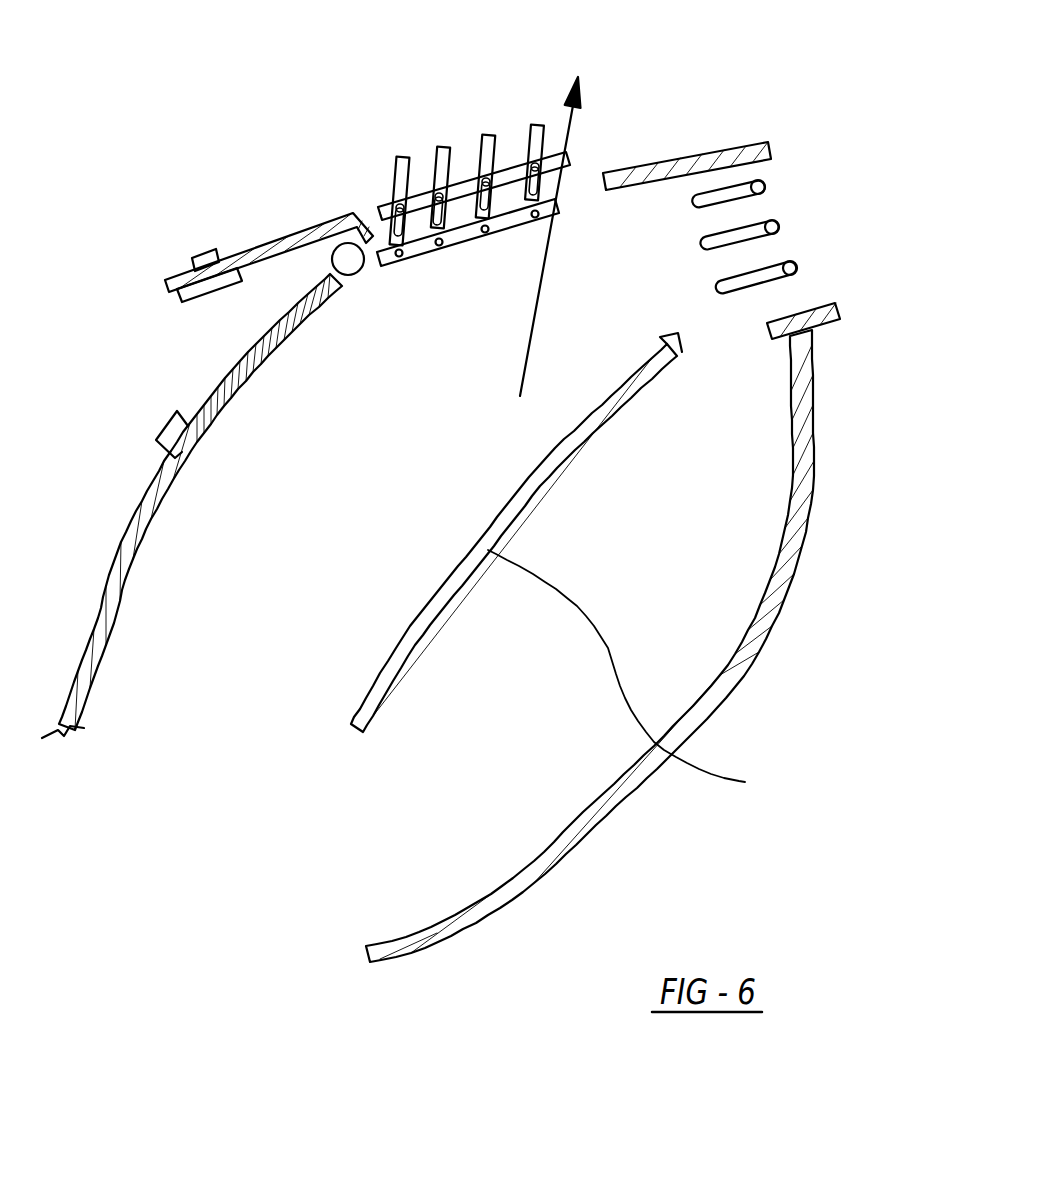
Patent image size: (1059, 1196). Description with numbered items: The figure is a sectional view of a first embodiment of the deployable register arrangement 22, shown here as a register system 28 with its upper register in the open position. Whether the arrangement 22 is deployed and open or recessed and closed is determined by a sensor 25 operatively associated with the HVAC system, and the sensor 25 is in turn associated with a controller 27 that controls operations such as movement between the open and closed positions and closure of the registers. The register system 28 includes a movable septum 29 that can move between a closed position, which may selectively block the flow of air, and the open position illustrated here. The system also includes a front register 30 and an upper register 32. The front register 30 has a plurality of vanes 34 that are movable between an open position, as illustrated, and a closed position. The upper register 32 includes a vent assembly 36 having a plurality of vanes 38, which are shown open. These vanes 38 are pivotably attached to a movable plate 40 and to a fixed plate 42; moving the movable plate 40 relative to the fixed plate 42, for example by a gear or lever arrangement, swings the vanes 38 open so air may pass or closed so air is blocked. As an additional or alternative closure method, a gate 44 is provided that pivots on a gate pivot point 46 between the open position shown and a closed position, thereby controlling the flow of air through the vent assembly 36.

The deployable register arrangement 22 is at (278, 236).
The sensor 25 is at (203, 259).
The controller 27 is at (193, 291).
The register system 28 is at (638, 237).
The movable septum 29 is at (745, 782).
The front register 30 is at (774, 300).
The upper register 32 is at (368, 199).
The vanes 34 is at (737, 193).
The vent assembly 36 is at (464, 195).
The vanes 38 is at (403, 155).
The movable plate 40 is at (413, 222).
The fixed plate 42 is at (467, 233).
The gate 44 is at (233, 369).
The gate pivot point 46 is at (353, 272).